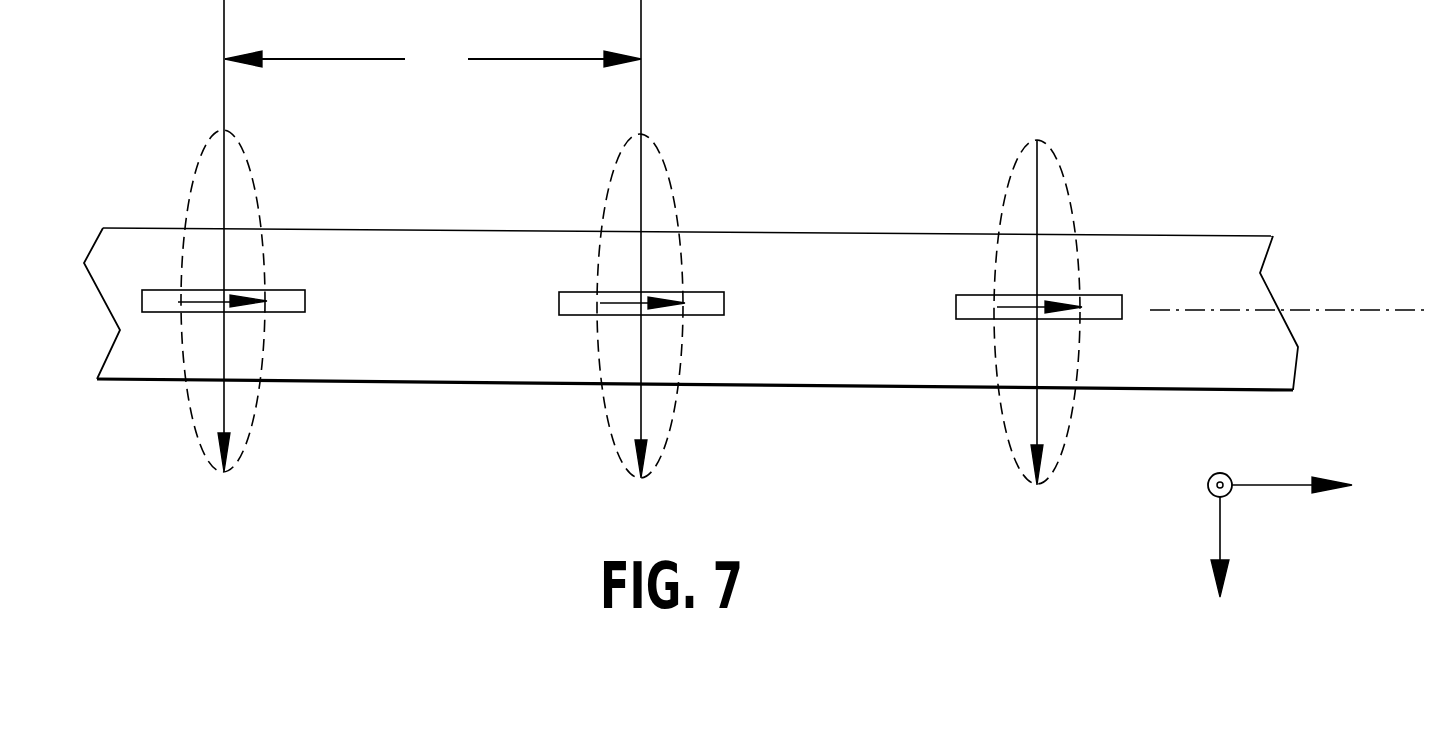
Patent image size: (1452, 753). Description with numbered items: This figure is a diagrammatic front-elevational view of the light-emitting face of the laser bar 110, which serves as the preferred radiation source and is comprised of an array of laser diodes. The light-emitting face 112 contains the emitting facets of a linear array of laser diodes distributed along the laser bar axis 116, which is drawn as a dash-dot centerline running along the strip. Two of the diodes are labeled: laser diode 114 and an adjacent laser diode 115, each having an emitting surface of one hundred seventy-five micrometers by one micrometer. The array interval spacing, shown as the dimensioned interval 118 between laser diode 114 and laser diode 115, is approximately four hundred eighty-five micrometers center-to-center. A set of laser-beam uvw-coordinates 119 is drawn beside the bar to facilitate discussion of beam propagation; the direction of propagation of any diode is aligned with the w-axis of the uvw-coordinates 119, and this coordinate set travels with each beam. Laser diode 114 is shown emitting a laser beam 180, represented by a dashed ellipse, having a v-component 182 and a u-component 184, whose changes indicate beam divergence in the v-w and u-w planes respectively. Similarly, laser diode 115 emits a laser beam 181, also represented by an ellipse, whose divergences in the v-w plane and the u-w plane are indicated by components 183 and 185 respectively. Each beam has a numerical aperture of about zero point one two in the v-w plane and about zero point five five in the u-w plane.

The laser bar 110 is at (691, 242).
The light-emitting face 112 is at (832, 243).
The laser diode 114 is at (292, 312).
The adjacent laser diode 115 is at (697, 315).
The laser bar axis 116 is at (1358, 310).
The interval 118 is at (433, 59).
The uvw-coordinates 119 is at (1257, 537).
The laser beam 180 is at (257, 183).
The laser beam 181 is at (668, 168).
The v-component 182 is at (203, 302).
The v-w plane divergence component 183 is at (620, 303).
The u-component 184 is at (224, 417).
The u-w plane divergence component 185 is at (641, 218).